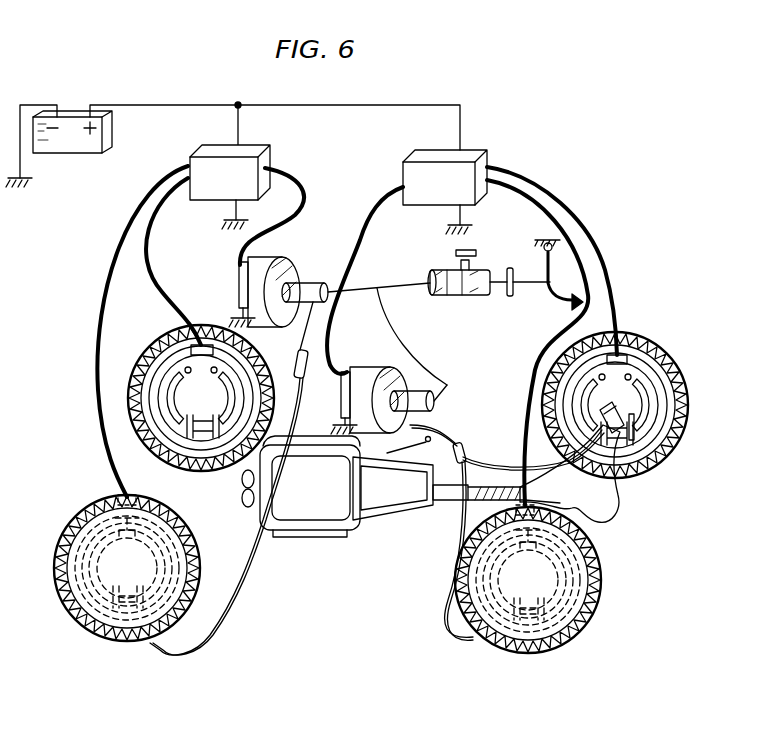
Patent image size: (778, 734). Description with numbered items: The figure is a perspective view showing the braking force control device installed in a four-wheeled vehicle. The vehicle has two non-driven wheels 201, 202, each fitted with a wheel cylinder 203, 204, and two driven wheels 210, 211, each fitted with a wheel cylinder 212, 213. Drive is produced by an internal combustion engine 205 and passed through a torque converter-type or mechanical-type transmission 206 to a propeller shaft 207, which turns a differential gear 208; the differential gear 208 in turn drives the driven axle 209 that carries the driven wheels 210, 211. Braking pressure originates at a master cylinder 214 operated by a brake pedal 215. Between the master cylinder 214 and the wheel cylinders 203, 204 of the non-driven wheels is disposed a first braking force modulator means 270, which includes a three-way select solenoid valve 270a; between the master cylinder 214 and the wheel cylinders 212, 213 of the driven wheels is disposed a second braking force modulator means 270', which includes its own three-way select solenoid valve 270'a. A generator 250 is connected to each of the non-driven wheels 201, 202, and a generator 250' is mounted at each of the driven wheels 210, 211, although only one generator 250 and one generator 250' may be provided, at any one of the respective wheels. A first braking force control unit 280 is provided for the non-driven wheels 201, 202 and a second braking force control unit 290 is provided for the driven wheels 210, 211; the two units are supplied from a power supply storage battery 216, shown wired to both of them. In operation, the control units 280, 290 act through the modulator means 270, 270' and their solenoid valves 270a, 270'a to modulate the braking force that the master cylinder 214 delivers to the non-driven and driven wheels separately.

The power supply storage battery 216 is at (74, 160).
The first braking force control unit 280 is at (252, 152).
The second braking force control unit 290 is at (476, 152).
The first braking force modulator means 270 is at (347, 314).
The three-way select solenoid valve 270a is at (238, 274).
The second braking force modulator means 270' is at (408, 383).
The three-way select solenoid valve 270'a is at (358, 384).
The master cylinder 214 is at (492, 296).
The brake pedal 215 is at (565, 270).
The generator 250 is at (121, 417).
The generator 250' is at (604, 433).
The non-driven wheel 201 is at (130, 400).
The non-driven wheel 202 is at (70, 616).
The wheel cylinder 203 is at (197, 433).
The wheel cylinder 204 is at (117, 640).
The internal combustion engine 205 is at (270, 540).
The transmission 206 is at (370, 522).
The propeller shaft 207 is at (488, 486).
The differential gear 208 is at (592, 512).
The driven axle 209 is at (627, 412).
The driven wheel 210 is at (684, 373).
The driven wheel 211 is at (587, 613).
The wheel cylinder 212 is at (622, 445).
The wheel cylinder 213 is at (537, 647).